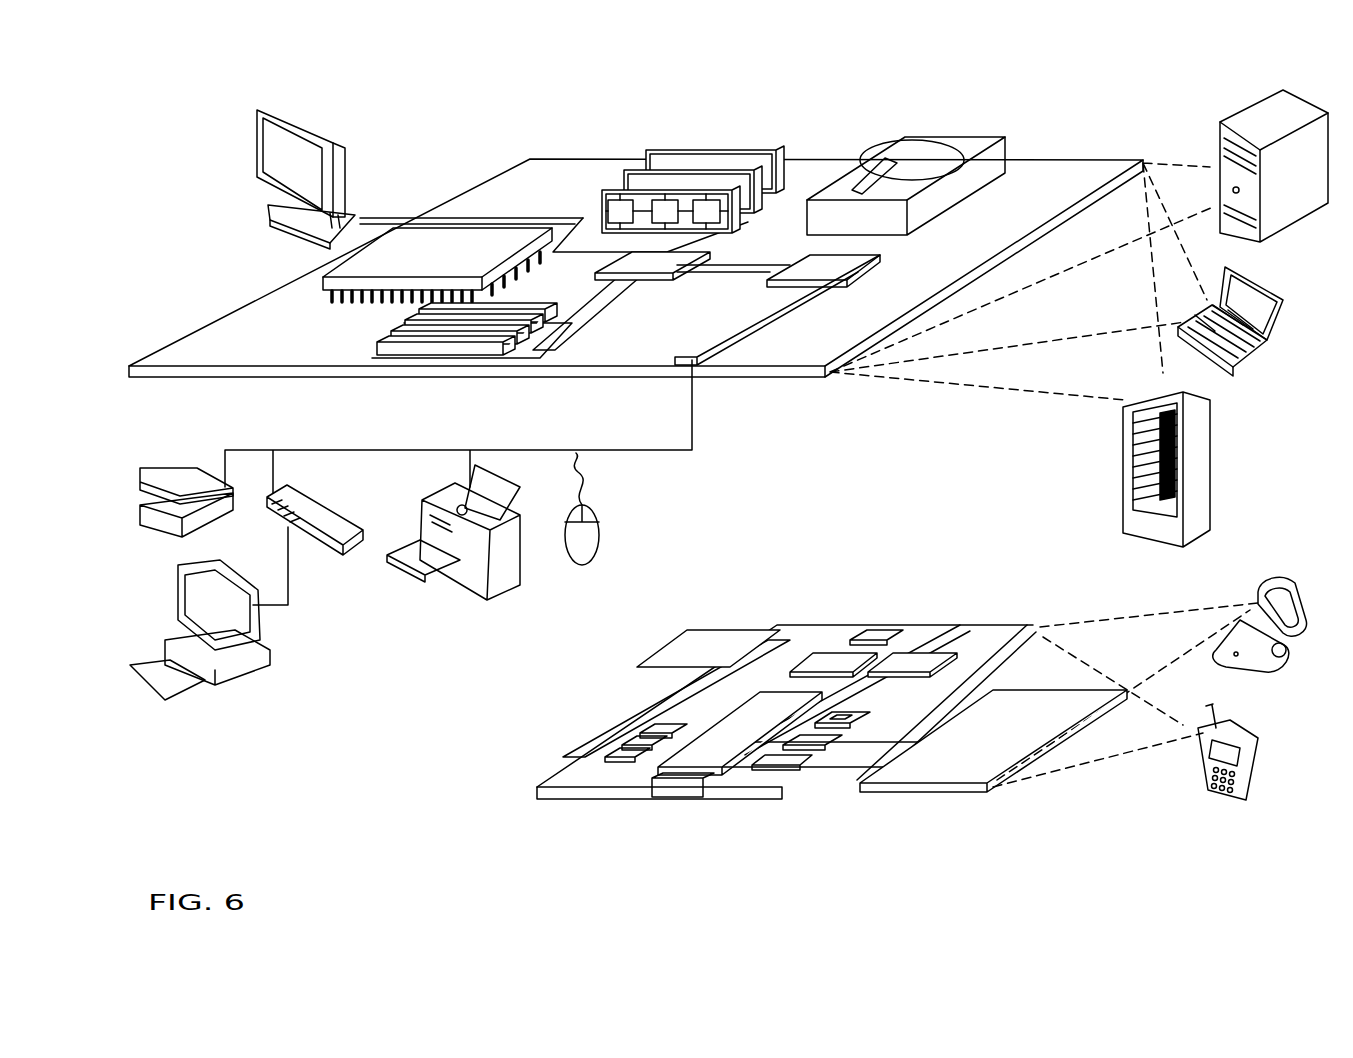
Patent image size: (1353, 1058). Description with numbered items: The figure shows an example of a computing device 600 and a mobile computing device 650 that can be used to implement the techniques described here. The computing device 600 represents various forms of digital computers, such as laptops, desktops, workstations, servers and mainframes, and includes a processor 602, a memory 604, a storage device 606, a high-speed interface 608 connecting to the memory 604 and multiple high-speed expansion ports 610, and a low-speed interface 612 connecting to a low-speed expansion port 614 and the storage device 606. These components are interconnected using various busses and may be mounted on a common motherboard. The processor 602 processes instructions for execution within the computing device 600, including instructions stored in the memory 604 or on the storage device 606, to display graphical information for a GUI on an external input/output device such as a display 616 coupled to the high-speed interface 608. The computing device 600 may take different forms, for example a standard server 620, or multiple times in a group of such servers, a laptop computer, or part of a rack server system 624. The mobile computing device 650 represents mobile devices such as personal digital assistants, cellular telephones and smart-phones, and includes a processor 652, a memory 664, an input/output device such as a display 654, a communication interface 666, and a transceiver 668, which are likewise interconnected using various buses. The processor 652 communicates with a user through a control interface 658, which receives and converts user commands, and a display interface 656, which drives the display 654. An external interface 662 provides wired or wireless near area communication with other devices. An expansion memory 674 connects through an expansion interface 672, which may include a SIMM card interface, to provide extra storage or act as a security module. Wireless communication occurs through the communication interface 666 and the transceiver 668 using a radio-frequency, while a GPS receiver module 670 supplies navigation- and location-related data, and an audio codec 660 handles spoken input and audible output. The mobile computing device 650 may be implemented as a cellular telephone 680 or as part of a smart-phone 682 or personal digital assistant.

The computing device 600 is at (453, 128).
The processor 602 is at (325, 281).
The memory 604 is at (660, 154).
The storage device 606 is at (900, 142).
The high-speed interface 608 is at (592, 228).
The high-speed expansion ports 610 is at (392, 340).
The low-speed interface 612 is at (806, 270).
The low-speed expansion port 614 is at (700, 367).
The display 616 is at (258, 112).
The standard server 620 is at (1218, 150).
The rack server system 624 is at (1125, 494).
The mobile computing device 650 is at (508, 798).
The processor 652 is at (706, 770).
The display 654 is at (955, 768).
The display interface 656 is at (790, 770).
The control interface 658 is at (815, 752).
The audio codec 660 is at (850, 730).
The external interface 662 is at (675, 790).
The memory 664 is at (625, 746).
The communication interface 666 is at (822, 665).
The transceiver 668 is at (905, 665).
The GPS receiver module 670 is at (876, 636).
The expansion interface 672 is at (762, 660).
The expansion memory 674 is at (682, 668).
The cellular telephone 680 is at (1250, 592).
The cellular phone 682 is at (1202, 758).